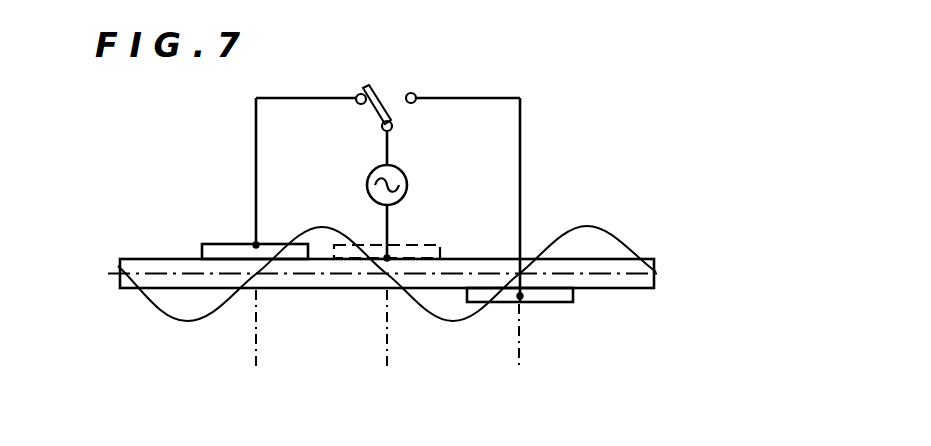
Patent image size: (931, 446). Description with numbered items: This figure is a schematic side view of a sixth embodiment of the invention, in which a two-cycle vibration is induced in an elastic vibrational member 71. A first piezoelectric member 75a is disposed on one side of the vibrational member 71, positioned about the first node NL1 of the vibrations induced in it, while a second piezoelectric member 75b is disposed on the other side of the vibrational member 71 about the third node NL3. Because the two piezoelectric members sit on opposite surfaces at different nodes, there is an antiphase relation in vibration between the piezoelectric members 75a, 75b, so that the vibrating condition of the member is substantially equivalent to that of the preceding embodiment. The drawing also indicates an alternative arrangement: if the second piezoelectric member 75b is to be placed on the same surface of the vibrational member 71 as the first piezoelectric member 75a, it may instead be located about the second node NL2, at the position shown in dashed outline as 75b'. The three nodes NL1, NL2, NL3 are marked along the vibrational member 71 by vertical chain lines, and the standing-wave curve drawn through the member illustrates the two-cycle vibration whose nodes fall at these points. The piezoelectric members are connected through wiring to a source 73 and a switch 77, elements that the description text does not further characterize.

The elastic vibrational member 71 is at (156, 266).
The AC power source 73 is at (372, 172).
The first piezoelectric member 75a is at (226, 250).
The second piezoelectric member 75b is at (561, 232).
The alternative position of second piezoelectric member 75b' is at (416, 218).
The switch 77 is at (386, 99).
The first node NL1 is at (250, 388).
The second node NL2 is at (386, 388).
The third node NL3 is at (518, 388).